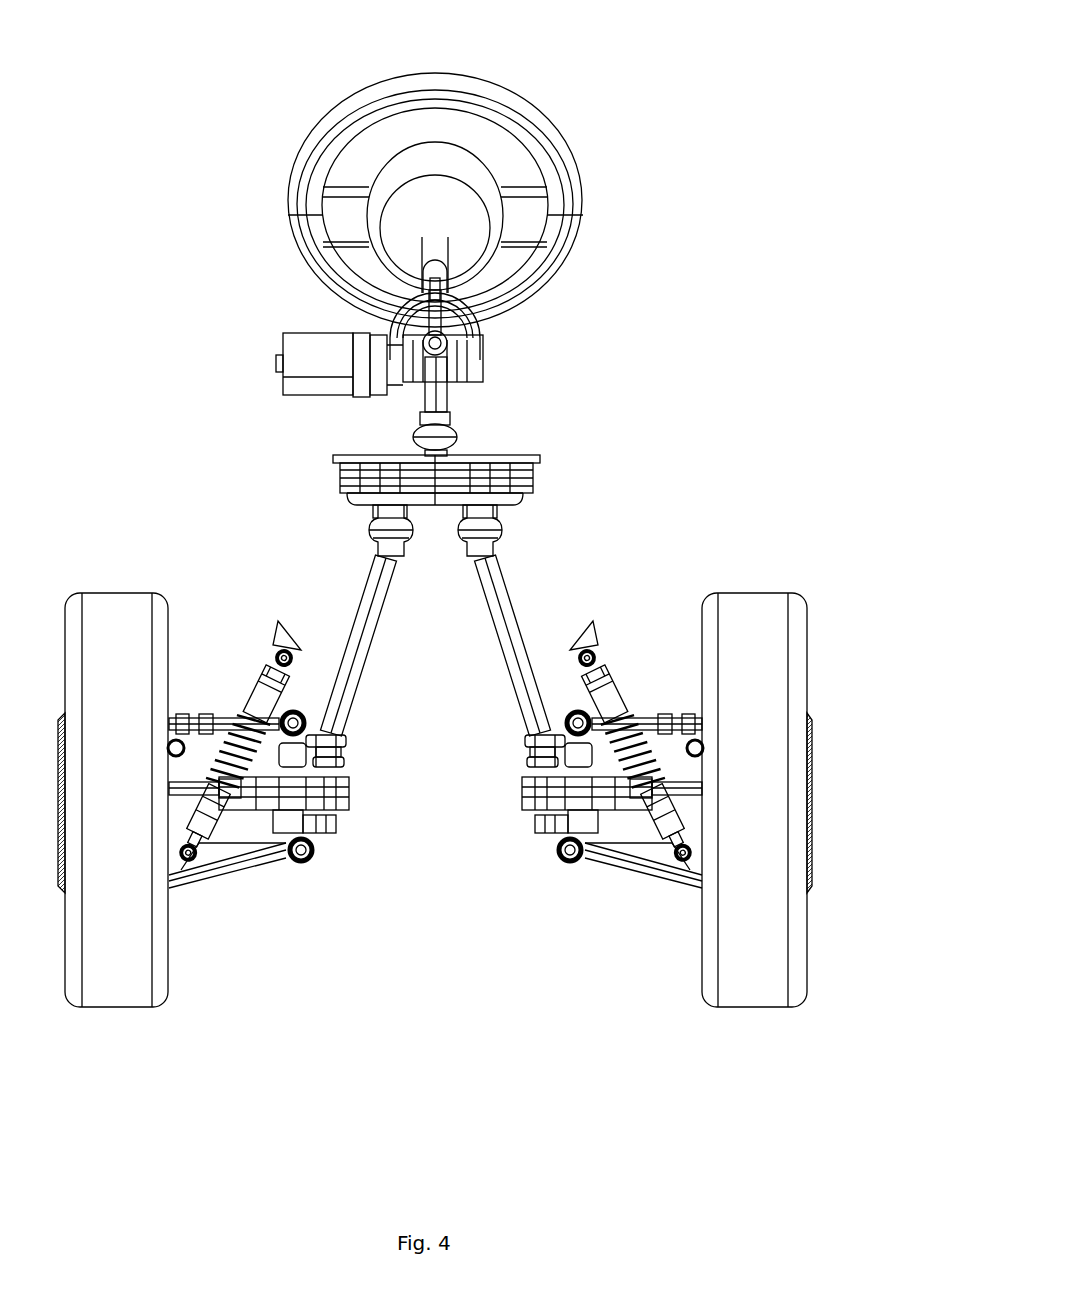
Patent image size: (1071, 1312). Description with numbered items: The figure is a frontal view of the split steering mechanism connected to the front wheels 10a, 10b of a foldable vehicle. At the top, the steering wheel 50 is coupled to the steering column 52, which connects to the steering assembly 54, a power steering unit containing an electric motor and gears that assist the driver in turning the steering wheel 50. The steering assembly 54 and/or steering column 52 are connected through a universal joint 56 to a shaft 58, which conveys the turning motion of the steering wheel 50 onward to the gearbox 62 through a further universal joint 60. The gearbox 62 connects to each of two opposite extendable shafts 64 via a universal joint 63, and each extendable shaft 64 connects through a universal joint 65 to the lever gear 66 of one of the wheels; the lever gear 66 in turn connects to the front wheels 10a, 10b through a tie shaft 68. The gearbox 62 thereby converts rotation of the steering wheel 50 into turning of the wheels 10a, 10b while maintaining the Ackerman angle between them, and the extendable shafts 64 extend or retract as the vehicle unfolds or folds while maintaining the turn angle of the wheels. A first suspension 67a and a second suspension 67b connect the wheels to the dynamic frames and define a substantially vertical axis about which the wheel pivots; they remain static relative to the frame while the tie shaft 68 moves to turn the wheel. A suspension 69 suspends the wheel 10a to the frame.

The front wheel 10a is at (749, 1010).
The front wheel 10b is at (112, 1010).
The steering wheel 50 is at (537, 113).
The steering column 52 is at (448, 271).
The steering assembly 54 is at (283, 346).
The universal joint 56 is at (447, 348).
The shaft 58 is at (405, 398).
The universal joint 60 is at (457, 433).
The gearbox 62 is at (437, 500).
The universal joint 63 is at (497, 547).
The extendable shaft 64 is at (502, 658).
The universal joint 65 is at (520, 750).
The lever gear 66 is at (525, 805).
The first suspension 67a is at (219, 720).
The second suspension 67b is at (215, 877).
The tie shaft 68 is at (642, 807).
The suspension 69 is at (635, 693).